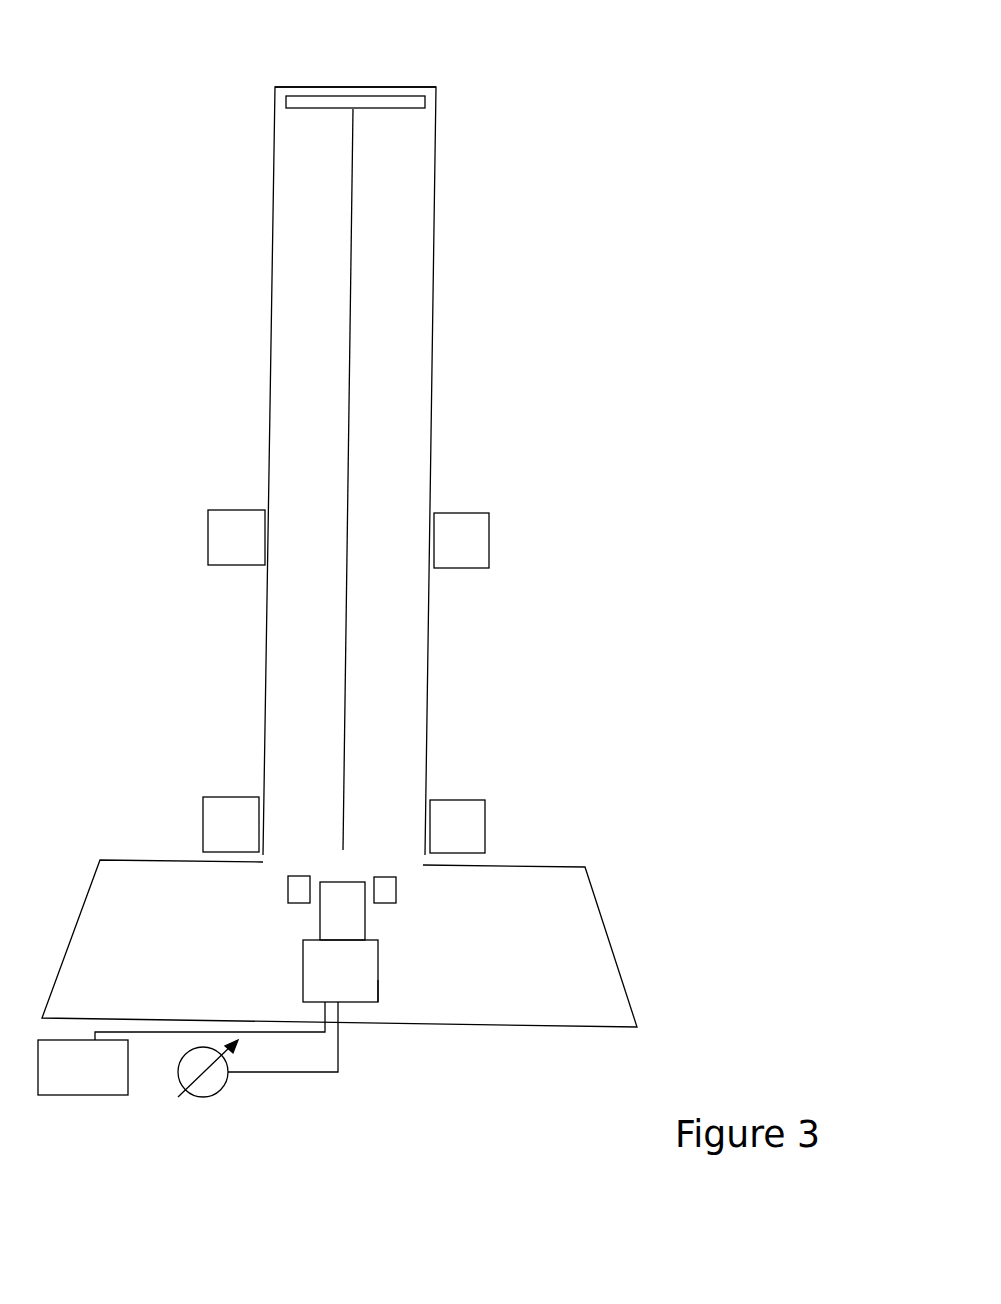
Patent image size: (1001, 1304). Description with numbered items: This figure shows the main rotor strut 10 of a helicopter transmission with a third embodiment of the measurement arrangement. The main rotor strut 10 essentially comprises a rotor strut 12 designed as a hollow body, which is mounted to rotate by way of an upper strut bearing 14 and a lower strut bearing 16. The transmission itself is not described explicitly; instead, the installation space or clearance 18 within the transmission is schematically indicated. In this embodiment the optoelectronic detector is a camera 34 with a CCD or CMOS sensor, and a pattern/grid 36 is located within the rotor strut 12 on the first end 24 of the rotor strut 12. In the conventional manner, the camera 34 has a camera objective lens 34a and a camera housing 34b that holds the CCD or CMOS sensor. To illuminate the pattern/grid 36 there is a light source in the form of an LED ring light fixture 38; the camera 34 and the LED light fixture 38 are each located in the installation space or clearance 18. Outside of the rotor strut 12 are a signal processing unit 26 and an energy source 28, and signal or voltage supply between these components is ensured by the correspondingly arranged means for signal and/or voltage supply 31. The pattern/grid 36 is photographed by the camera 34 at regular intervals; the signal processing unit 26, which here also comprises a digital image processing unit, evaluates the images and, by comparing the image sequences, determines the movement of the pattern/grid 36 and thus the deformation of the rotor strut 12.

The main rotor strut 10 is at (104, 175).
The rotor strut 12 is at (272, 310).
The upper strut bearing 14 is at (466, 513).
The lower strut bearing 16 is at (452, 800).
The installation space or clearance 18 is at (90, 887).
The first end 24 is at (435, 62).
The signal processing unit 26 is at (78, 1095).
The energy source 28 is at (215, 1097).
The means for signal and/or voltage supply 31 is at (278, 1033).
The camera 34 is at (402, 940).
The camera objective lens 34a is at (365, 913).
The camera housing 34b is at (378, 990).
The pattern/grid 36 is at (307, 96).
The LED ring light fixture 38 is at (397, 895).